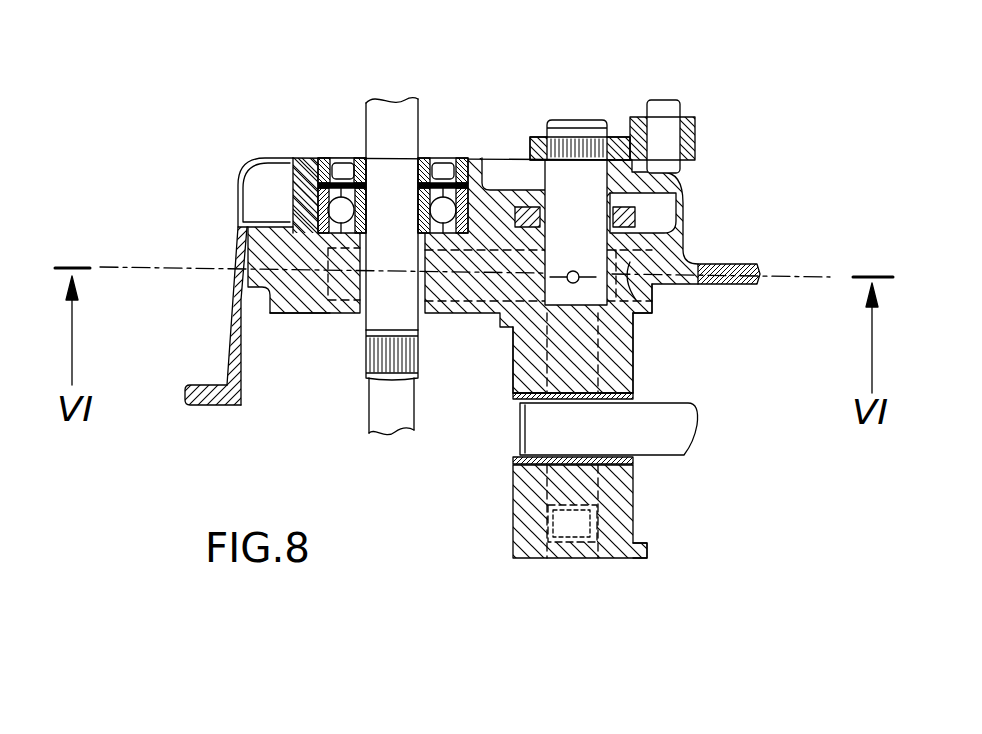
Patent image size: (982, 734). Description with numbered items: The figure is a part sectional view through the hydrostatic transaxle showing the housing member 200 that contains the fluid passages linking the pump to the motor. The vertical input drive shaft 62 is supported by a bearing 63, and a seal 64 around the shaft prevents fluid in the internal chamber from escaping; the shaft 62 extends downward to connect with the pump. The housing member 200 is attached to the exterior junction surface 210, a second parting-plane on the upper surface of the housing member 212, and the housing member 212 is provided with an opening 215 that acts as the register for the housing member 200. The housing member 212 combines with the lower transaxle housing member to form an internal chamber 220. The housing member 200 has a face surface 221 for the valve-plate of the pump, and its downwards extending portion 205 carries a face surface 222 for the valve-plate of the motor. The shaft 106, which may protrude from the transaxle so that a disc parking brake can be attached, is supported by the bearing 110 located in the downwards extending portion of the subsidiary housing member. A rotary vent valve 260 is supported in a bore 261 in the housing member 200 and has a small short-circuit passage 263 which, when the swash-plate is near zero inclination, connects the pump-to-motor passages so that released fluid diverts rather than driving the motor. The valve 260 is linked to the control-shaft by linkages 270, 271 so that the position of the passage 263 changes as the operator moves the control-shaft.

The input drive shaft 62 is at (413, 140).
The bearing 63 is at (317, 205).
The seal 64 is at (340, 158).
The shaft 106 is at (612, 447).
The bearing 110 is at (635, 461).
The housing member 200 is at (492, 205).
The downwards extending portion 205 is at (528, 505).
The exterior junction surface 210 is at (236, 236).
The housing member 212 is at (730, 266).
The opening 215 is at (652, 305).
The internal chamber 220 is at (500, 430).
The face surface 221 is at (330, 313).
The face surface 222 is at (634, 500).
The rotary vent valve 260 is at (603, 198).
The bore 261 is at (648, 187).
The passage 263 is at (566, 282).
The linkage 270 is at (695, 148).
The linkage 271 is at (693, 120).